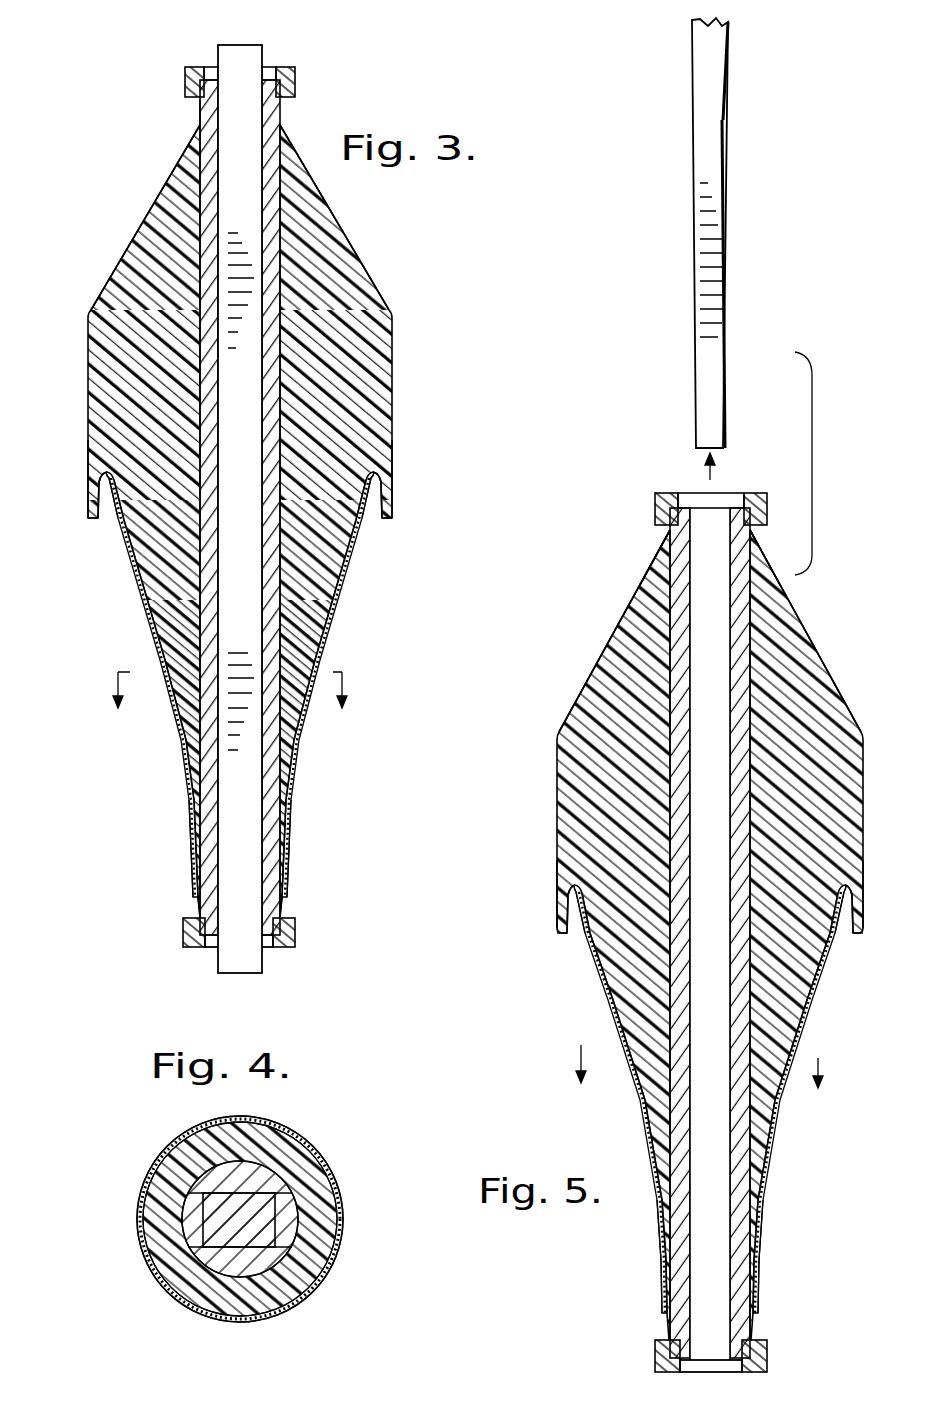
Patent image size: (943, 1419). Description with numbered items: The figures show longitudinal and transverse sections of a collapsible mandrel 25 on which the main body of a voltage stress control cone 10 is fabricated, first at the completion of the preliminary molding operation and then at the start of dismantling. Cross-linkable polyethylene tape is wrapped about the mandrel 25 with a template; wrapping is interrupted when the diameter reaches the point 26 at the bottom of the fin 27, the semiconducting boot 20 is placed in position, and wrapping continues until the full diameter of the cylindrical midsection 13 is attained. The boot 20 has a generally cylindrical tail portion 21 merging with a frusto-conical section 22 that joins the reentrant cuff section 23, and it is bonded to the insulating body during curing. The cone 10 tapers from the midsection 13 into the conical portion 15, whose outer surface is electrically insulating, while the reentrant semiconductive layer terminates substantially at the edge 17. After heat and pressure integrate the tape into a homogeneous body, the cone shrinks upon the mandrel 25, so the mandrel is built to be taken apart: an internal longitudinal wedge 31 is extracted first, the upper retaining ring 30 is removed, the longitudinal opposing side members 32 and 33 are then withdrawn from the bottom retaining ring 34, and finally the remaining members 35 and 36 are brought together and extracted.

In FIG. 3, the voltage stress control cone 10 is at (70, 312).
In FIG. 5, the voltage stress control cone 10 is at (545, 704).
In FIG. 3, the cylindrical midsection 13 is at (392, 388).
In FIG. 5, the cylindrical midsection 13 is at (555, 793).
In FIG. 3, the conical portion 15 is at (140, 230).
In FIG. 5, the conical portion 15 is at (812, 645).
In FIG. 3, the edge 17 is at (100, 522).
In FIG. 5, the edge 17 is at (578, 936).
In FIG. 3, the boot 20 is at (267, 684).
In FIG. 3, the tail portion 21 is at (290, 830).
In FIG. 5, the tail portion 21 is at (757, 1266).
In FIG. 3, the frusto-conical section 22 is at (325, 612).
In FIG. 4, the frusto-conical section 22 is at (320, 1272).
In FIG. 5, the frusto-conical section 22 is at (710, 1099).
In FIG. 3, the reentrant cuff section 23 is at (375, 520).
In FIG. 5, the reentrant cuff section 23 is at (842, 920).
In FIG. 3, the mandrel 25 is at (195, 117).
In FIG. 3, the point 26 is at (380, 458).
In FIG. 5, the point 26 is at (570, 880).
In FIG. 3, the fin 27 is at (392, 500).
In FIG. 5, the fin 27 is at (557, 917).
In FIG. 3, the upper retaining ring 30 is at (295, 75).
In FIG. 5, the upper retaining ring 30 is at (655, 500).
In FIG. 3, the internal longitudinal wedge 31 is at (262, 965).
In FIG. 4, the internal longitudinal wedge 31 is at (260, 1202).
In FIG. 5, the internal longitudinal wedge 31 is at (700, 328).
In FIG. 3, the longitudinal opposing side member 32 is at (195, 905).
In FIG. 4, the longitudinal opposing side member 32 is at (195, 1205).
In FIG. 5, the longitudinal opposing side member 32 is at (672, 560).
In FIG. 3, the longitudinal opposing side member 33 is at (283, 908).
In FIG. 4, the longitudinal opposing side member 33 is at (287, 1228).
In FIG. 5, the longitudinal opposing side member 33 is at (740, 582).
In FIG. 3, the bottom retaining ring 34 is at (295, 930).
In FIG. 5, the bottom retaining ring 34 is at (655, 1352).
In FIG. 4, the remaining member 35 is at (258, 1173).
In FIG. 5, the remaining member 35 is at (692, 532).
In FIG. 4, the remaining member 36 is at (300, 1293).